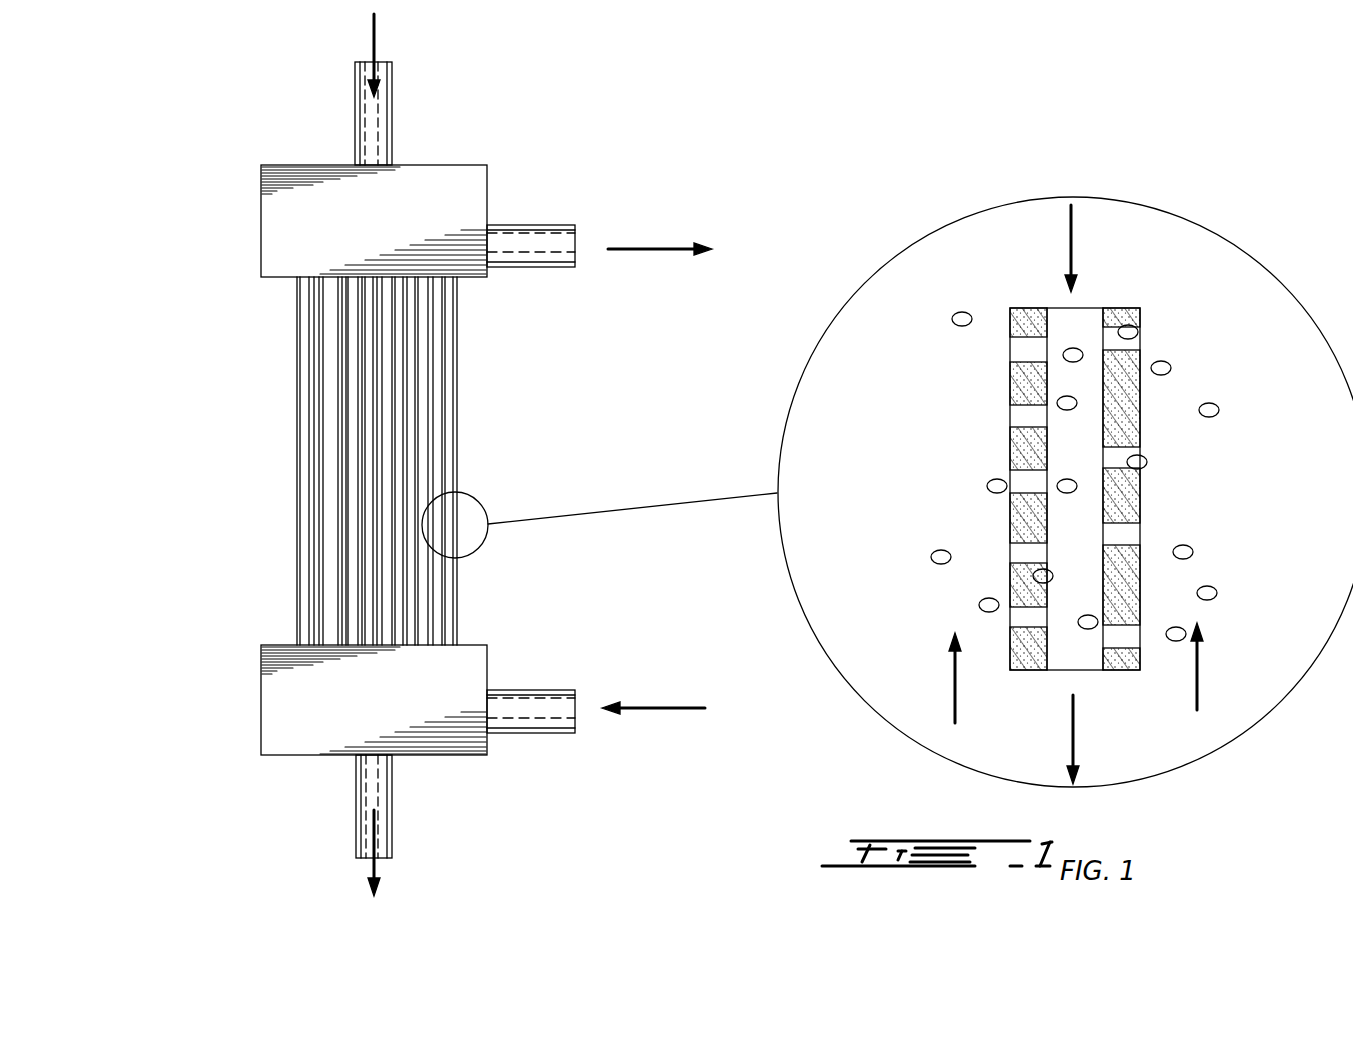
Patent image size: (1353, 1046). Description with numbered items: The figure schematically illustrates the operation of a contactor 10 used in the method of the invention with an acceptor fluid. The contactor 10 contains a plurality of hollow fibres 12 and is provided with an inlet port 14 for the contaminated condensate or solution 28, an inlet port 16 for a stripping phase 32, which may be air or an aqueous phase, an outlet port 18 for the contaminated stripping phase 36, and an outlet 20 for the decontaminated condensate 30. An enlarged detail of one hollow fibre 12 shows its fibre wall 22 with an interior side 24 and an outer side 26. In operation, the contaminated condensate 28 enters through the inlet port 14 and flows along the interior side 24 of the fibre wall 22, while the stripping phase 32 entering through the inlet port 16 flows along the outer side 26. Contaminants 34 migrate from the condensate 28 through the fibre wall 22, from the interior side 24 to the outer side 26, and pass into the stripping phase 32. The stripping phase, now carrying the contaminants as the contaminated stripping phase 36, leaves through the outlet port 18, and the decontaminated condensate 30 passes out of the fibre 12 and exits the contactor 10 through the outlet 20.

The contactor 10 is at (232, 256).
The hollow fibres 12 is at (322, 442).
The inlet port 14 is at (355, 108).
The inlet port 16 is at (530, 690).
The outlet port 18 is at (530, 224).
The outlet 20 is at (393, 807).
The fibre wall 22 is at (1140, 410).
The interior side 24 is at (1103, 512).
The outer side 26 is at (1140, 488).
The contaminated condensate or solution 28 is at (374, 38).
The decontaminated condensate 30 is at (377, 870).
The stripping phase 32 is at (660, 710).
The contaminants 34 is at (1193, 552).
The contaminated stripping phase 36 is at (660, 250).